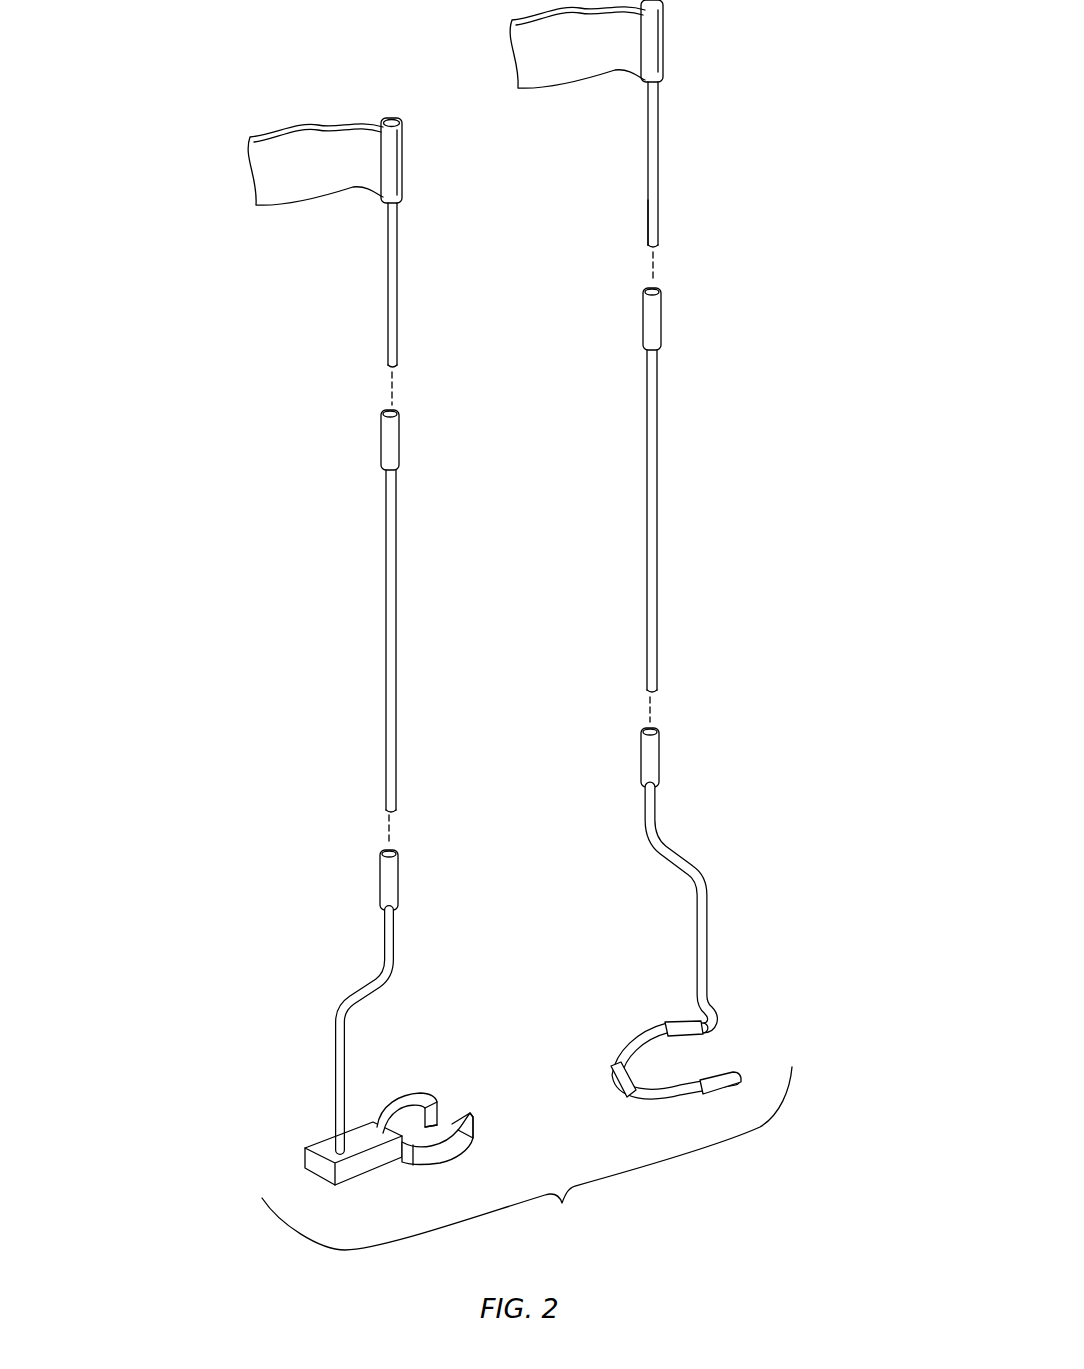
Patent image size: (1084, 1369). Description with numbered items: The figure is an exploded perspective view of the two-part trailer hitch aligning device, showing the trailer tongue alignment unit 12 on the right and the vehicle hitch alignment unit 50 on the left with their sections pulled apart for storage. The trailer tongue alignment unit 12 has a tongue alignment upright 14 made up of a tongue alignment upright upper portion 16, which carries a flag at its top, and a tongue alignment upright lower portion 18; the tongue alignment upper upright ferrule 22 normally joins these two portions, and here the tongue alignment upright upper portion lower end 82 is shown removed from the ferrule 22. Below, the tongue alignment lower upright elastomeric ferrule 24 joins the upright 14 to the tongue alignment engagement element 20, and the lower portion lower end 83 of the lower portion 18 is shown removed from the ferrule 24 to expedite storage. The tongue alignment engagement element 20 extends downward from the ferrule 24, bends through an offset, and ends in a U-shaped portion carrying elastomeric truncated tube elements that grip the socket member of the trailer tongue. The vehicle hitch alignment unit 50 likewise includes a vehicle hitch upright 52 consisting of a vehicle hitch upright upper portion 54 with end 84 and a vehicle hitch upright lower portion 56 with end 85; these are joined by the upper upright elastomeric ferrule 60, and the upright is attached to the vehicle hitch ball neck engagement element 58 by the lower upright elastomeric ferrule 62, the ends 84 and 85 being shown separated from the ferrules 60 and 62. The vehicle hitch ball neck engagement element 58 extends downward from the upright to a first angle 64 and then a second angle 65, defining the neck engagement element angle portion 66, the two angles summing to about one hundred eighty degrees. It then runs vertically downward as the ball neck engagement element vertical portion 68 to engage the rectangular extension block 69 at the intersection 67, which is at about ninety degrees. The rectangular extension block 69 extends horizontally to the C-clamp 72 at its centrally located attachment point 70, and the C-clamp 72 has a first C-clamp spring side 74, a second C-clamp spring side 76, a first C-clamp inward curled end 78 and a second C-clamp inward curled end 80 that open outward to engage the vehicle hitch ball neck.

The trailer tongue alignment unit 12 is at (660, 160).
The tongue alignment upright 14 is at (658, 215).
The tongue alignment upright upper portion 16 is at (648, 248).
The tongue alignment upright upper portion lower end 82 is at (662, 252).
The tongue alignment upper upright ferrule 22 is at (663, 340).
The tongue alignment upright lower portion 18 is at (658, 525).
The lower portion lower end 83 is at (660, 690).
The tongue alignment lower upright elastomeric ferrule 24 is at (662, 770).
The tongue alignment engagement element 20 is at (632, 1047).
The vehicle hitch alignment unit 50 is at (388, 300).
The vehicle hitch upright 52 is at (390, 342).
The vehicle hitch upright upper portion 54 is at (390, 365).
The end 84 is at (395, 368).
The upper upright elastomeric ferrule 60 is at (390, 447).
The vehicle hitch upright lower portion 56 is at (393, 530).
The end 85 is at (385, 838).
The lower upright elastomeric ferrule 62 is at (392, 892).
The first angle 64 is at (383, 967).
The vehicle hitch ball neck engagement element 58 is at (366, 985).
The neck engagement element angle portion 66 is at (358, 992).
The second angle 65 is at (338, 1010).
The ball neck engagement element vertical portion 68 is at (335, 1070).
The intersection 67 is at (305, 1155).
The rectangular extension block 69 is at (360, 1170).
The attachment point 70 is at (465, 1109).
The second C-clamp spring side 76 is at (413, 1092).
The second C-clamp inward curled end 80 is at (445, 1113).
The first C-clamp inward curled end 78 is at (478, 1118).
The ball neck engagement element C-clamp 72 is at (470, 1148).
The first C-clamp spring side 74 is at (430, 1165).